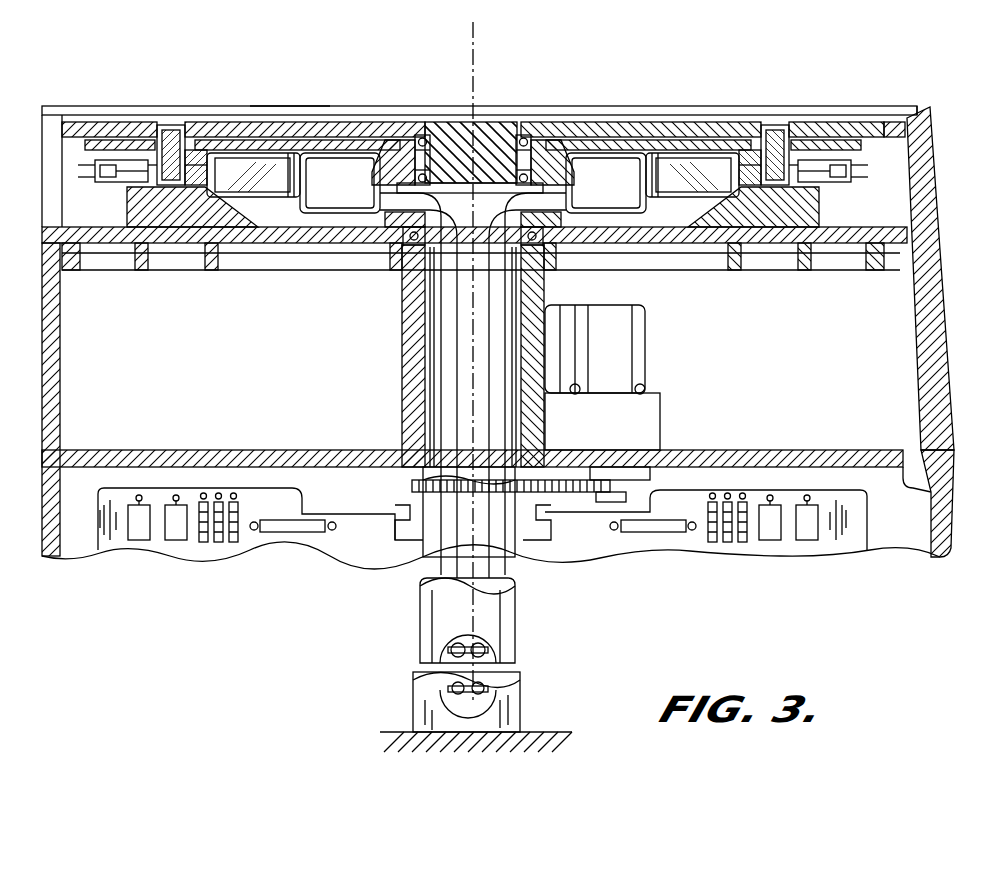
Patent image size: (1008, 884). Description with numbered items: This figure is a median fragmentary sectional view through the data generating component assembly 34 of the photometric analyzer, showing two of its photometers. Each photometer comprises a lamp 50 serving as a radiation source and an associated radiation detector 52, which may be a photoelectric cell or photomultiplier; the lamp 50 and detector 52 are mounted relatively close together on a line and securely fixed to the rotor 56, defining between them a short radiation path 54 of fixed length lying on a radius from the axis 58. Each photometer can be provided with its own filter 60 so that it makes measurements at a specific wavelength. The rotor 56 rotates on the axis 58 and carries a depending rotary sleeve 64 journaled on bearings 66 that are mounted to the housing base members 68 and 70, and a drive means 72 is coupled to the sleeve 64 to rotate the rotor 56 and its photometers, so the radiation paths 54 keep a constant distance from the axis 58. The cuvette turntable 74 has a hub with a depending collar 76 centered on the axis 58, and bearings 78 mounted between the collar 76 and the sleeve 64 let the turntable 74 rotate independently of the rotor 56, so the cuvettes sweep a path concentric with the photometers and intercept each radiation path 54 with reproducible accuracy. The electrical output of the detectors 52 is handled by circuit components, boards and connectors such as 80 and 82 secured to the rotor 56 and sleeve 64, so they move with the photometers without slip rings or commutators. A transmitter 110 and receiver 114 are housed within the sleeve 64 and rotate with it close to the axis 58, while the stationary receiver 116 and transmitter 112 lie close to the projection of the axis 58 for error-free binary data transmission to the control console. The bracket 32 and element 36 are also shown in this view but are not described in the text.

The bracket 32 is at (171, 128).
The data generating component assembly 34 is at (724, 88).
The housing 36 is at (290, 53).
The lamp 50 is at (97, 181).
The radiation detector 52 is at (275, 160).
The short radiation path 54 is at (147, 182).
The rotor 56 is at (403, 150).
The axis 58 is at (476, 58).
The filter 60 is at (199, 150).
The rotary sleeve 64 is at (431, 328).
The bearings 66 is at (412, 276).
The housing base member 68 is at (290, 242).
The housing base member 70 is at (179, 452).
The drive means 72 is at (520, 490).
The cuvette turntable 74 is at (324, 128).
The collar 76 is at (488, 150).
The bearings 78 is at (436, 172).
The circuit component 80 is at (324, 197).
The circuit component 82 is at (303, 514).
The transmitter 110 is at (452, 655).
The transmitter 112 is at (495, 675).
The receiver 114 is at (485, 655).
The receiver 116 is at (445, 676).